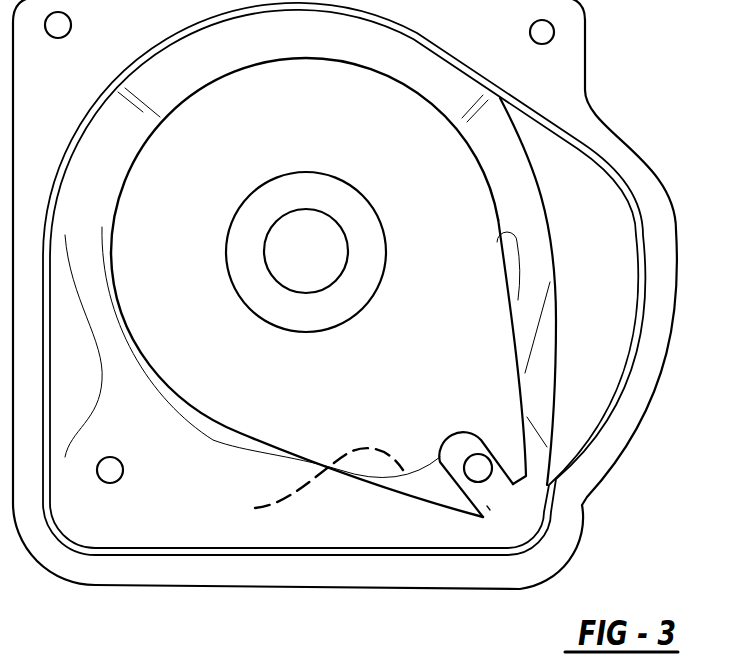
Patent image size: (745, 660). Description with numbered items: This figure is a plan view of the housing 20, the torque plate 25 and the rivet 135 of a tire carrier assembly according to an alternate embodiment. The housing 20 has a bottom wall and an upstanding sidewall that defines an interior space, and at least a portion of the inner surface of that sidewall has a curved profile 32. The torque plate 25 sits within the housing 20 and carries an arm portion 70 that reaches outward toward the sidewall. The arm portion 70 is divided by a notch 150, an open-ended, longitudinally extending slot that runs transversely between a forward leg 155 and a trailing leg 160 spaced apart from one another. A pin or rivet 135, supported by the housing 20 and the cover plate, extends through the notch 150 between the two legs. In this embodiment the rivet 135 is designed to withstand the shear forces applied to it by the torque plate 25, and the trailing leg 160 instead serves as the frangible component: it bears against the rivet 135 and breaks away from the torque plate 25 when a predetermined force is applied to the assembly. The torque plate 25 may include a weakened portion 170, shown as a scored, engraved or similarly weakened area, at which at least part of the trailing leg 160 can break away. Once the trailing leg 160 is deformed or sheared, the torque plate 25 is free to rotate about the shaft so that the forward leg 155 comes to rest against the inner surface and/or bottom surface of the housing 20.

The housing 20 is at (588, 92).
The torque plate 25 is at (360, 153).
The curved profile 32 is at (640, 321).
The arm portion 70 is at (472, 435).
The rivet 135 is at (489, 494).
The notch 150 is at (488, 492).
The forward leg 155 is at (510, 450).
The trailing leg 160 is at (445, 497).
The weakened portion 170 is at (310, 483).